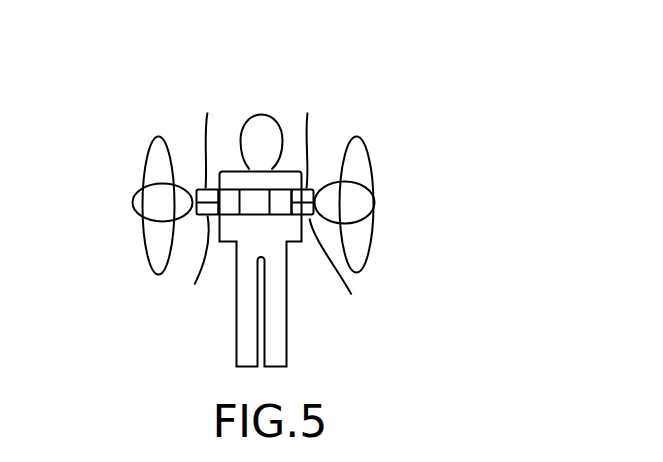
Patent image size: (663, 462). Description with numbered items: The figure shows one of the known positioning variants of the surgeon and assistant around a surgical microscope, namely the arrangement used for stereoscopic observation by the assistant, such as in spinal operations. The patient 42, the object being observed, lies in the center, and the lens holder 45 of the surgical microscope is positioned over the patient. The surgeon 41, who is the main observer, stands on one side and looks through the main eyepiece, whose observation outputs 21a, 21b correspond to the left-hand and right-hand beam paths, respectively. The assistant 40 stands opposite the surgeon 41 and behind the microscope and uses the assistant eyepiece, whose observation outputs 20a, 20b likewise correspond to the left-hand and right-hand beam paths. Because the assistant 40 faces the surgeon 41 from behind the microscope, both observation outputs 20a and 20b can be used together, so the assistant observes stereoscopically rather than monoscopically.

The assistant 40 is at (352, 153).
The surgeon 41 is at (155, 165).
The patient 42 is at (263, 114).
The lens holder 45 is at (258, 203).
The observation output 20a is at (307, 134).
The observation output 20b is at (341, 276).
The observation output 21a is at (210, 134).
The observation output 21b is at (194, 269).